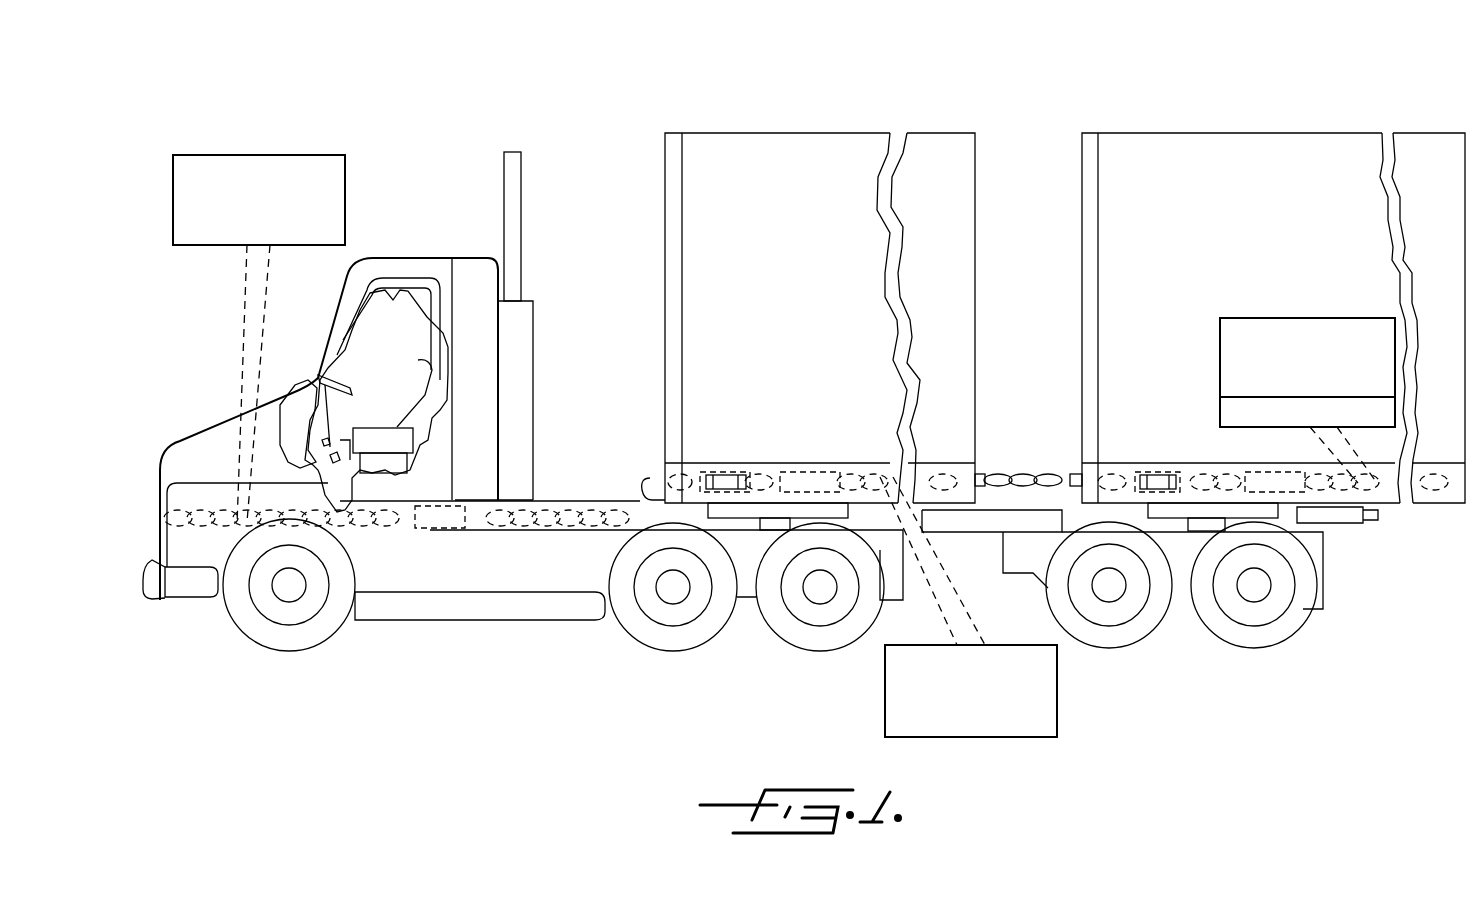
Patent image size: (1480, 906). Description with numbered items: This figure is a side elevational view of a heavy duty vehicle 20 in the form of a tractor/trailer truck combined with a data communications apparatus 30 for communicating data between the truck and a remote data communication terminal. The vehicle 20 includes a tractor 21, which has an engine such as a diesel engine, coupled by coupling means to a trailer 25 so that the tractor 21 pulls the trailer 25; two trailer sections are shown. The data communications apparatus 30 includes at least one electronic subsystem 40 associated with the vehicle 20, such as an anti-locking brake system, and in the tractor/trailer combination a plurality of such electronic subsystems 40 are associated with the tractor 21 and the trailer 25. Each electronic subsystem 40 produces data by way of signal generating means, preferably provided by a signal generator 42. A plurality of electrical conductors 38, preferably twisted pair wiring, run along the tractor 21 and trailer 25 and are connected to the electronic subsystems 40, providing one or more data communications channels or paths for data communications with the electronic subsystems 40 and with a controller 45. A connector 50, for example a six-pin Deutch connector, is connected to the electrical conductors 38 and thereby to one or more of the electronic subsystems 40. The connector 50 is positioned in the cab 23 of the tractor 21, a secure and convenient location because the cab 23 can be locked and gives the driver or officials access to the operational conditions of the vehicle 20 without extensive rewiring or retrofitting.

The heavy duty vehicle 20 is at (610, 674).
The tractor 21 is at (202, 432).
The cab 23 is at (364, 401).
The trailer 25 is at (911, 132).
The data communications apparatus 30 is at (354, 421).
The electrical conductors 38 is at (568, 500).
The electronic subsystem 40 is at (318, 155).
The signal generator 42 is at (1220, 418).
The controller 45 is at (447, 522).
The connector 50 is at (338, 468).